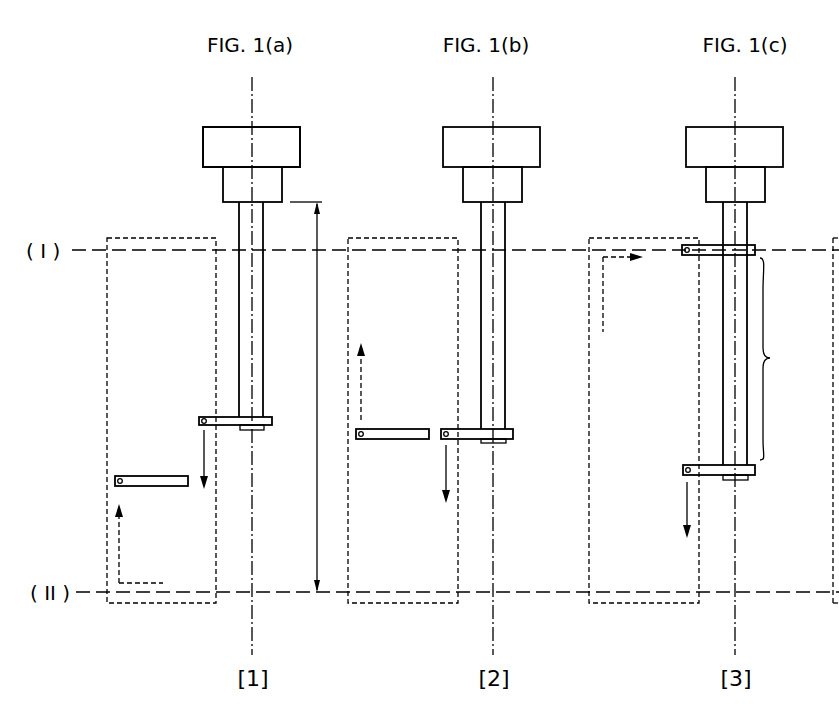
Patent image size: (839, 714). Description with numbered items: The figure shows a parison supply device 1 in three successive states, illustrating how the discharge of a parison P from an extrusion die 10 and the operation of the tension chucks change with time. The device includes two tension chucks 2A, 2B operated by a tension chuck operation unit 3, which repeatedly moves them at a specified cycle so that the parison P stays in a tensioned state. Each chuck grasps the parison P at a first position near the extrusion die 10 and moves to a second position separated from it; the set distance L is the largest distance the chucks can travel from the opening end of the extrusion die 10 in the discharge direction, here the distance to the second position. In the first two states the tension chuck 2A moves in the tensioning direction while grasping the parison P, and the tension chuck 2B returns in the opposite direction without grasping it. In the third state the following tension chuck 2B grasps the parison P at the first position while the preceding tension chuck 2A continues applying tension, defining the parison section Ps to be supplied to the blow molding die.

In FIG. 1A, the parison supply device 1 is at (131, 166).
In FIG. 1A, the extrusion die 10 is at (300, 147).
In FIG. 1B, the extrusion die 10 is at (540, 147).
In FIG. 1C, the extrusion die 10 is at (783, 147).
In FIG. 1A, the parison P is at (236, 230).
In FIG. 1B, the parison P is at (508, 232).
In FIG. 1C, the parison P is at (751, 232).
In FIG. 1A, the set distance L is at (306, 397).
In FIG. 1C, the parison section Ps is at (781, 359).
In FIG. 1A, the tension chuck operation unit 3 is at (107, 388).
In FIG. 1B, the tension chuck operation unit 3 is at (408, 237).
In FIG. 1C, the tension chuck operation unit 3 is at (650, 237).
In FIG. 1A, the tension chuck 2A is at (225, 416).
In FIG. 1B, the tension chuck 2A is at (513, 434).
In FIG. 1C, the tension chuck 2A is at (757, 476).
In FIG. 1A, the tension chuck 2B is at (165, 488).
In FIG. 1B, the tension chuck 2B is at (395, 440).
In FIG. 1C, the tension chuck 2B is at (712, 258).